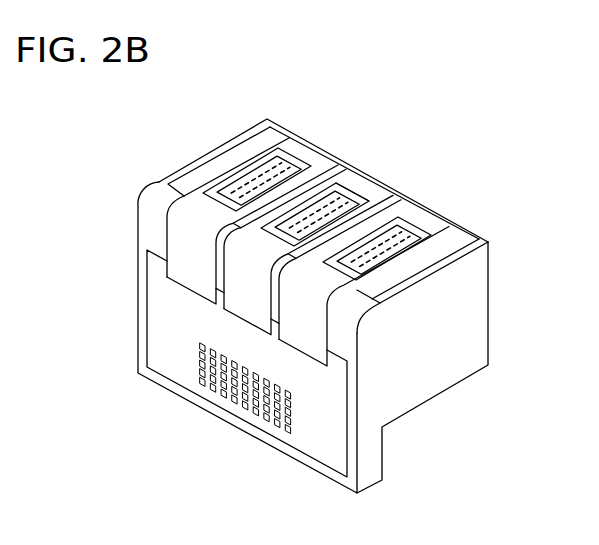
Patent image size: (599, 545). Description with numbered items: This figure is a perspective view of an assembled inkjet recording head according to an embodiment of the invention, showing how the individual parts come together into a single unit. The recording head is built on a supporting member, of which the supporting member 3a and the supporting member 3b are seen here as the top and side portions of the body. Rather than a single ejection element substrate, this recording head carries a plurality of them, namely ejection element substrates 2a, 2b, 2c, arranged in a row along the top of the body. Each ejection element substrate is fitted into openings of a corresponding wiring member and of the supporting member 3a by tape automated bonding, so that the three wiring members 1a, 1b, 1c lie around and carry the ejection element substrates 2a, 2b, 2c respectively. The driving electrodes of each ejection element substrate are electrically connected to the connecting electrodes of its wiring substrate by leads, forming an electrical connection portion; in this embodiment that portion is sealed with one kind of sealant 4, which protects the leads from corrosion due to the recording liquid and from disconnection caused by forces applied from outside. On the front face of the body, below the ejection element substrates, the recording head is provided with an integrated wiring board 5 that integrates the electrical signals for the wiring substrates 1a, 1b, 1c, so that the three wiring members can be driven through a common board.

The wiring member 1a is at (305, 148).
The wiring member 1b is at (348, 180).
The wiring member 1c is at (415, 253).
The ejection element substrate 2a is at (280, 167).
The ejection element substrate 2b is at (368, 213).
The ejection element substrate 2c is at (422, 245).
The supporting member 3a is at (235, 153).
The supporting member 3b is at (413, 387).
The sealant 4 is at (362, 208).
The integrated wiring board 5 is at (170, 355).